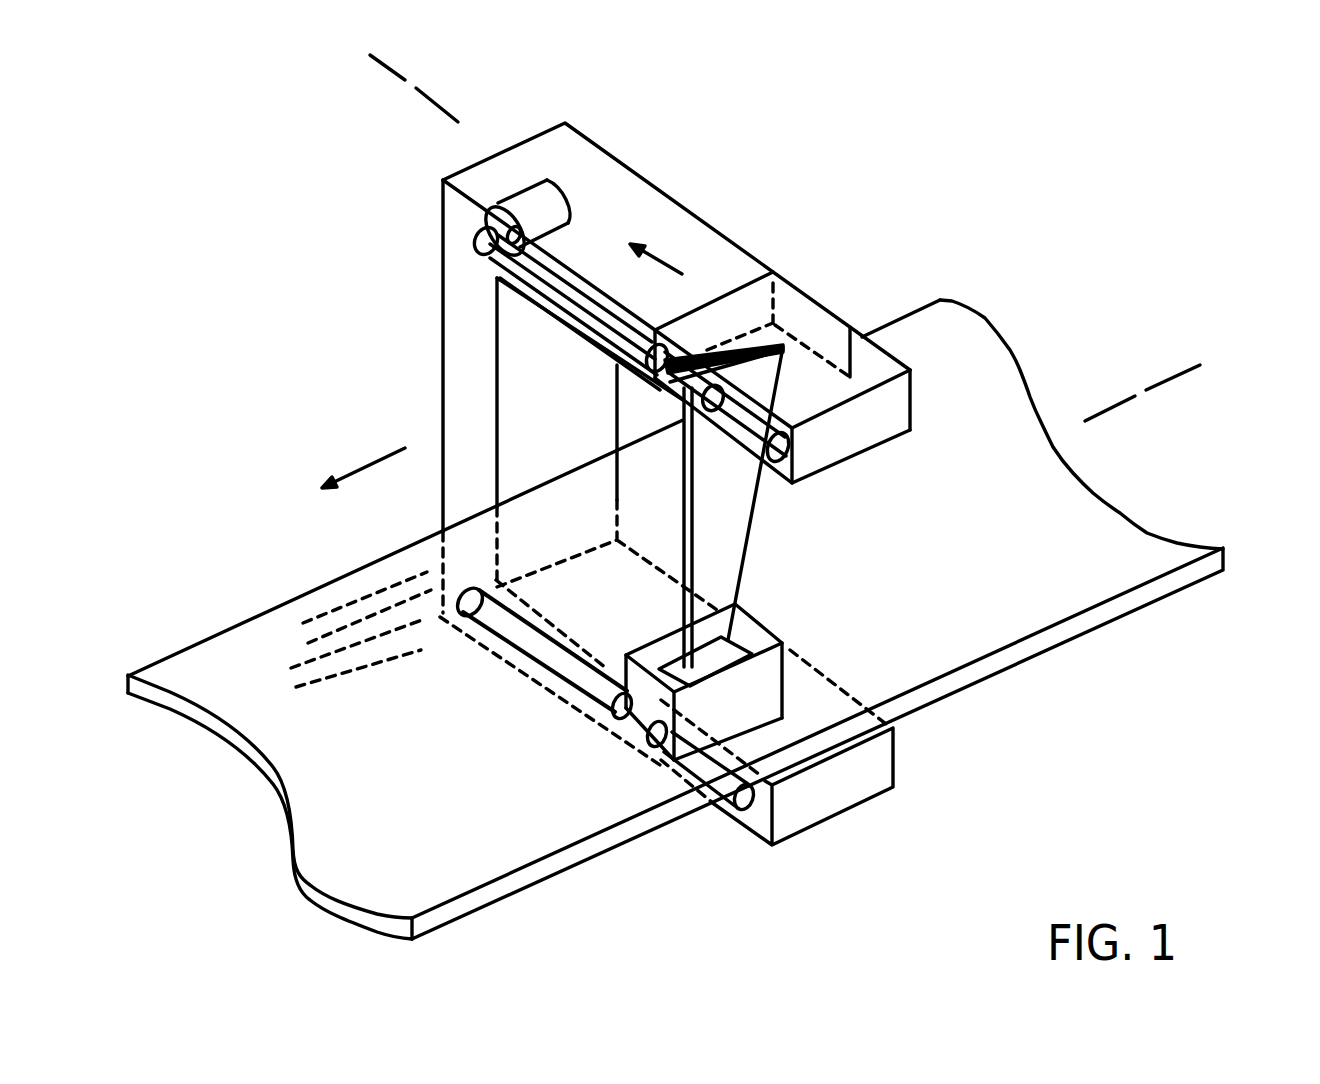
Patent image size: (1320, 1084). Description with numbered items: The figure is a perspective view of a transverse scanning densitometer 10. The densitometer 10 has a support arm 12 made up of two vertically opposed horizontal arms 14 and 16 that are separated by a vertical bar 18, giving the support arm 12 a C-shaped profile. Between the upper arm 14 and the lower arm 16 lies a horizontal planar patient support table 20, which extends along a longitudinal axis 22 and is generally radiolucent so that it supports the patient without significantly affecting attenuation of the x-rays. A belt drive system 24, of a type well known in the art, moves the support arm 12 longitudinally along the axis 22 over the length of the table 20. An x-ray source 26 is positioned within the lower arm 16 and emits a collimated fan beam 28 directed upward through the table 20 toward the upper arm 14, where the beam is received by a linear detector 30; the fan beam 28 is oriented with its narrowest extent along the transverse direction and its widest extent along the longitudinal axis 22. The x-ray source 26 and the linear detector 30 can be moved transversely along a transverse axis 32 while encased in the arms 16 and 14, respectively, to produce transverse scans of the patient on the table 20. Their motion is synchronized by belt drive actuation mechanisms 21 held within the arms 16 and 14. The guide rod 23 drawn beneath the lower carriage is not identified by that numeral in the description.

The densitometer 10 is at (912, 180).
The support arm 12 is at (613, 326).
The horizontal arm 14 is at (686, 232).
The horizontal arm 16 is at (805, 805).
The vertical bar 18 is at (456, 355).
The patient support table 20 is at (1105, 572).
The belt drive actuation mechanisms 21 is at (530, 280).
The longitudinal axis 22 is at (1140, 388).
The lower guide rod 23 is at (538, 676).
The belt drive system 24 is at (377, 592).
The x-ray source 26 is at (762, 690).
The fan beam 28 is at (748, 533).
The linear detector 30 is at (800, 307).
The transverse axis 32 is at (422, 96).